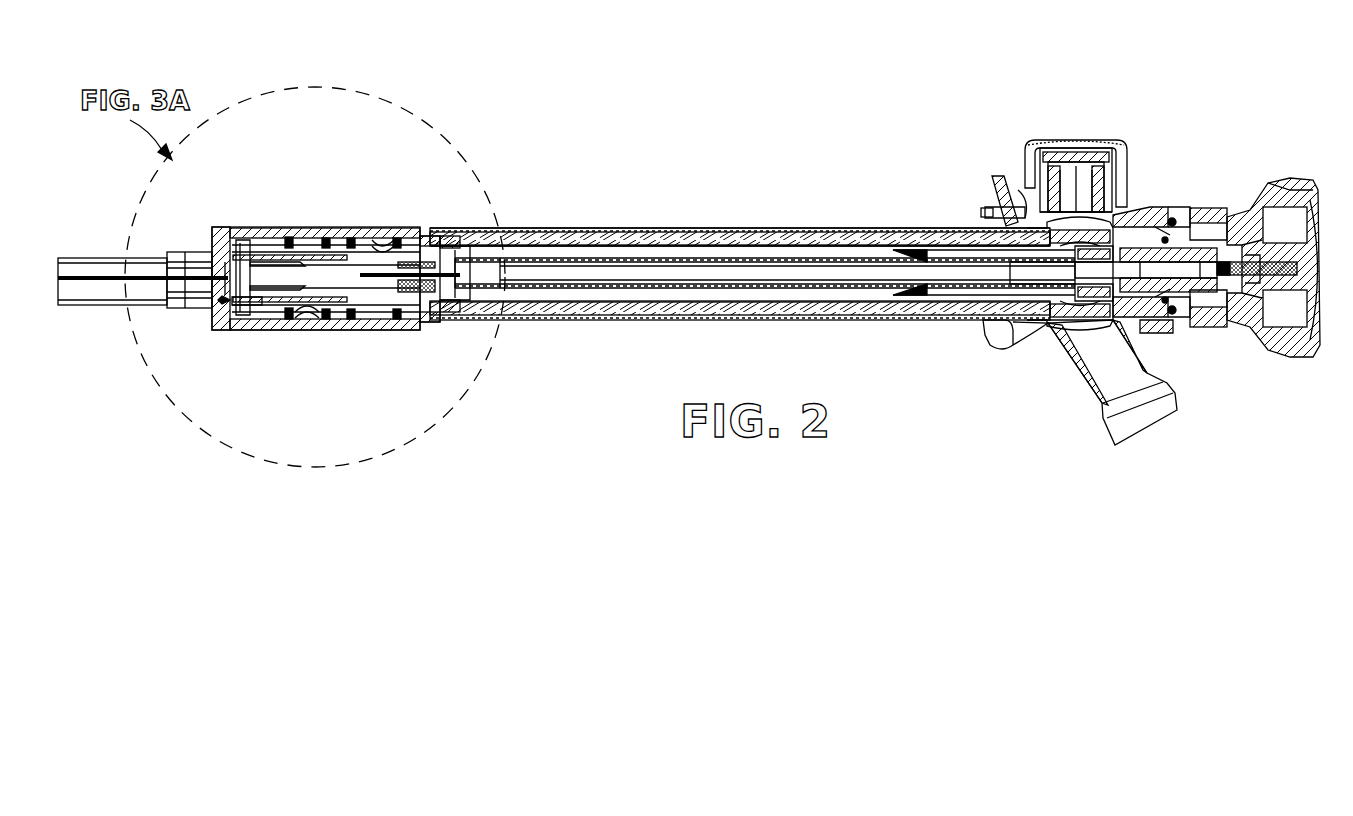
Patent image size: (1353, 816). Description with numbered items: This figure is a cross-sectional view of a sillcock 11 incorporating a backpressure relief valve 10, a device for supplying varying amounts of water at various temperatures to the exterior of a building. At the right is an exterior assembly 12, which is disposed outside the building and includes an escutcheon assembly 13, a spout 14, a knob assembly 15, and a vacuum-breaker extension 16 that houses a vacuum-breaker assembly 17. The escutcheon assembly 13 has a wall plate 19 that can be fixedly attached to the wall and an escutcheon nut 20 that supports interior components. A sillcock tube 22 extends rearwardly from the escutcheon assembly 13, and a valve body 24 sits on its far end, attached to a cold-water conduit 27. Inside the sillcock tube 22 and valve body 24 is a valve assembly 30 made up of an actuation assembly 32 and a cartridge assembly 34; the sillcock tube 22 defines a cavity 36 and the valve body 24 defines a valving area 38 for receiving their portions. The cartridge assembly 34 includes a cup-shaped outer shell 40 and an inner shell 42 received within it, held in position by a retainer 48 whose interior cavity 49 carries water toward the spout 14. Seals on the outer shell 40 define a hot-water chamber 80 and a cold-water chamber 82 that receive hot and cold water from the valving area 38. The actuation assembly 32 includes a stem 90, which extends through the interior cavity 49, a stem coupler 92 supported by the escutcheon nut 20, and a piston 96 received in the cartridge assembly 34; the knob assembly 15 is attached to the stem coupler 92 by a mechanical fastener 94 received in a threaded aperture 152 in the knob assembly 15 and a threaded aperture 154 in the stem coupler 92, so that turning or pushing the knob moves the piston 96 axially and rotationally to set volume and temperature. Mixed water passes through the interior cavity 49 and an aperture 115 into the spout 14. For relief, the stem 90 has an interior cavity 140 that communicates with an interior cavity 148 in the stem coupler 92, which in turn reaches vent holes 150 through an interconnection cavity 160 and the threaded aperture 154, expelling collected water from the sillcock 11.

The backpressure relief valve 10 is at (217, 300).
The sillcock 11 is at (893, 178).
The exterior assembly 12 is at (1153, 190).
The escutcheon assembly 13 is at (1017, 170).
The spout 14 is at (1067, 383).
The knob assembly 15 is at (1257, 337).
The vacuum-breaker extension 16 is at (1113, 210).
The vacuum-breaker assembly 17 is at (1037, 143).
The wall plate 19 is at (993, 200).
The escutcheon nut 20 is at (1193, 270).
The sillcock tube 22 is at (630, 320).
The valve body 24 is at (310, 230).
The cold-water conduit 27 is at (90, 267).
The valve assembly 30 is at (440, 243).
The actuation assembly 32 is at (610, 258).
The cartridge assembly 34 is at (250, 323).
The cavity 36 is at (692, 233).
The valving area 38 is at (228, 313).
The outer shell 40 is at (240, 250).
The inner shell 42 is at (260, 257).
The retainer 48 is at (790, 237).
The interior cavity 49 is at (840, 250).
The hot-water chamber 80 is at (387, 240).
The cold-water chamber 82 is at (307, 313).
The stem 90 is at (727, 288).
The stem coupler 92 is at (1143, 333).
The mechanical fastener 94 is at (1297, 357).
The piston 96 is at (392, 293).
The aperture 115 is at (1017, 337).
The interior cavity 140 is at (820, 273).
The interior cavity 148 is at (1207, 287).
The vent holes 150 is at (1172, 222).
The threaded aperture 152 is at (1287, 190).
The threaded aperture 154 is at (1250, 223).
The interconnection cavity 160 is at (1227, 280).